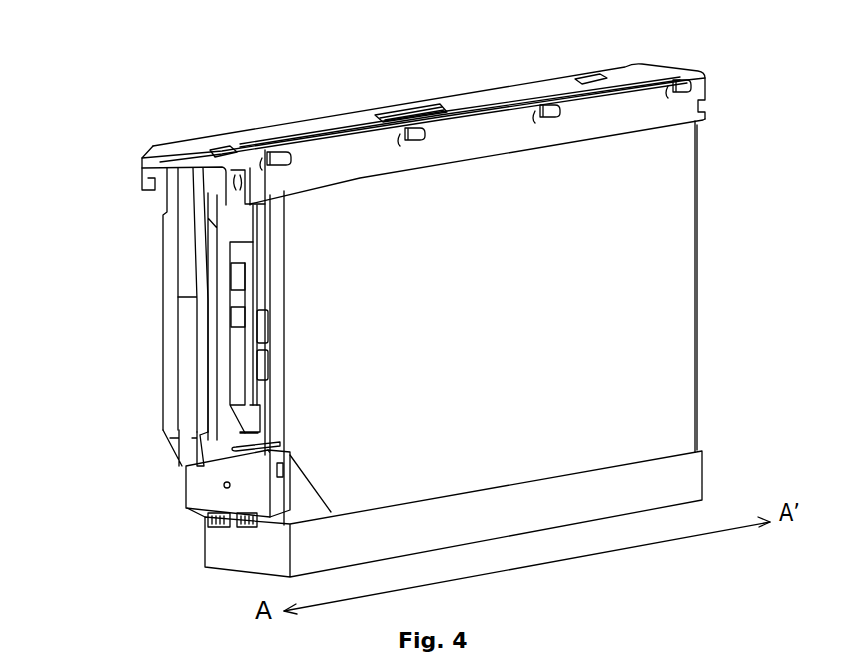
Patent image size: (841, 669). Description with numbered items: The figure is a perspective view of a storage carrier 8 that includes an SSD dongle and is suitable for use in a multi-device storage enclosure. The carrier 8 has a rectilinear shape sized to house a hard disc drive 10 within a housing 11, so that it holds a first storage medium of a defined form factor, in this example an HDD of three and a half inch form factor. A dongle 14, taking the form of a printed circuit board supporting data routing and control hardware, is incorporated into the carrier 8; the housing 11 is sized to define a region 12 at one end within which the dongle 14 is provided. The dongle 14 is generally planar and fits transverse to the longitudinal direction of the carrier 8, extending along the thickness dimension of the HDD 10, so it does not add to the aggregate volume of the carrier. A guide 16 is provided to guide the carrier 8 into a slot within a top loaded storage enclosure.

The storage carrier 8 is at (245, 112).
The housing 11 is at (277, 183).
The hard disc drive 10 is at (633, 370).
The region 12 is at (157, 370).
The guide 16 is at (178, 437).
The dongle 14 is at (253, 433).